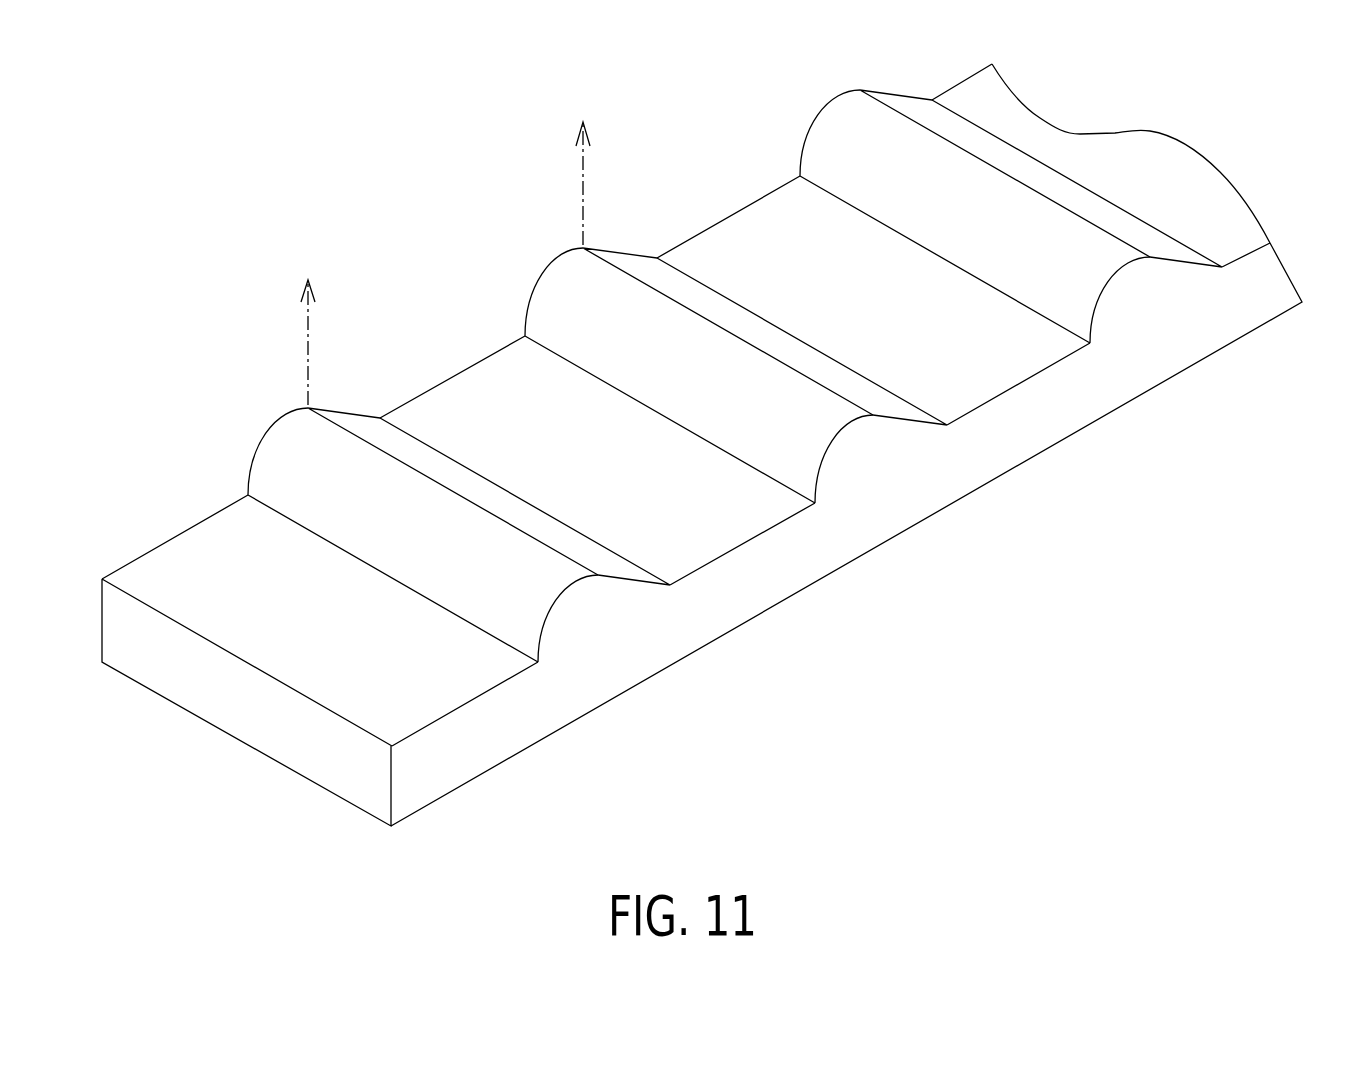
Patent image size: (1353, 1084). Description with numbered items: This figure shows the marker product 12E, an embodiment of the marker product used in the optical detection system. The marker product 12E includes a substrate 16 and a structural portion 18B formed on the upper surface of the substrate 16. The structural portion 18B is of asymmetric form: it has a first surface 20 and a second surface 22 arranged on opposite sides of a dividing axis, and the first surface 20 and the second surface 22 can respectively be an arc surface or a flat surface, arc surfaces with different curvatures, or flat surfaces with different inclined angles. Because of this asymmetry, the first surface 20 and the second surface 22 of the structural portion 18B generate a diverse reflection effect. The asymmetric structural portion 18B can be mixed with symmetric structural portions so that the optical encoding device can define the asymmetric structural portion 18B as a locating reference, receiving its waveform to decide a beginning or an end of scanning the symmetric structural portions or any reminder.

The marker product 12E is at (702, 460).
The substrate 16 is at (498, 728).
The structural portion 18B is at (603, 632).
The first surface 20 is at (682, 373).
The second surface 22 is at (349, 391).